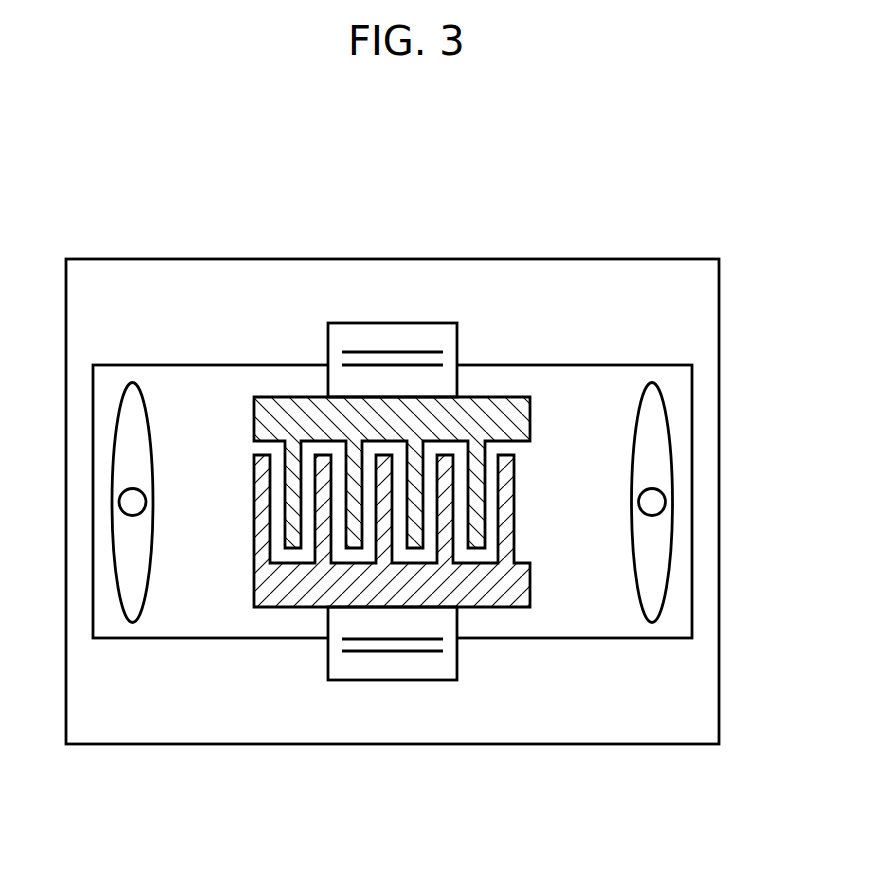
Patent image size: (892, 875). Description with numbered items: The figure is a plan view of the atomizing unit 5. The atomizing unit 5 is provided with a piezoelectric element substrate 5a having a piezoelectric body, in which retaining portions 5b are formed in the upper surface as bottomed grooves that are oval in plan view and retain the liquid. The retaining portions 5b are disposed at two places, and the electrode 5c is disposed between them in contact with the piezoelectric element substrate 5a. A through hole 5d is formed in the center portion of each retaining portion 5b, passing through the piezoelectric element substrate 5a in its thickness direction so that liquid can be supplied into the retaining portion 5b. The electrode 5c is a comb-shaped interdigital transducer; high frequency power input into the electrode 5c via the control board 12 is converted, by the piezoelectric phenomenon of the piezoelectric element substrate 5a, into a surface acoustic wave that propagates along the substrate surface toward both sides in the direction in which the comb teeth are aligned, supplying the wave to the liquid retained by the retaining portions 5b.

The atomizing unit 5 is at (440, 454).
The control board 12 is at (165, 281).
The piezoelectric element substrate 5a is at (603, 375).
The retaining portion 5b is at (667, 428).
The electrode 5c is at (256, 523).
The through hole 5d is at (665, 500).